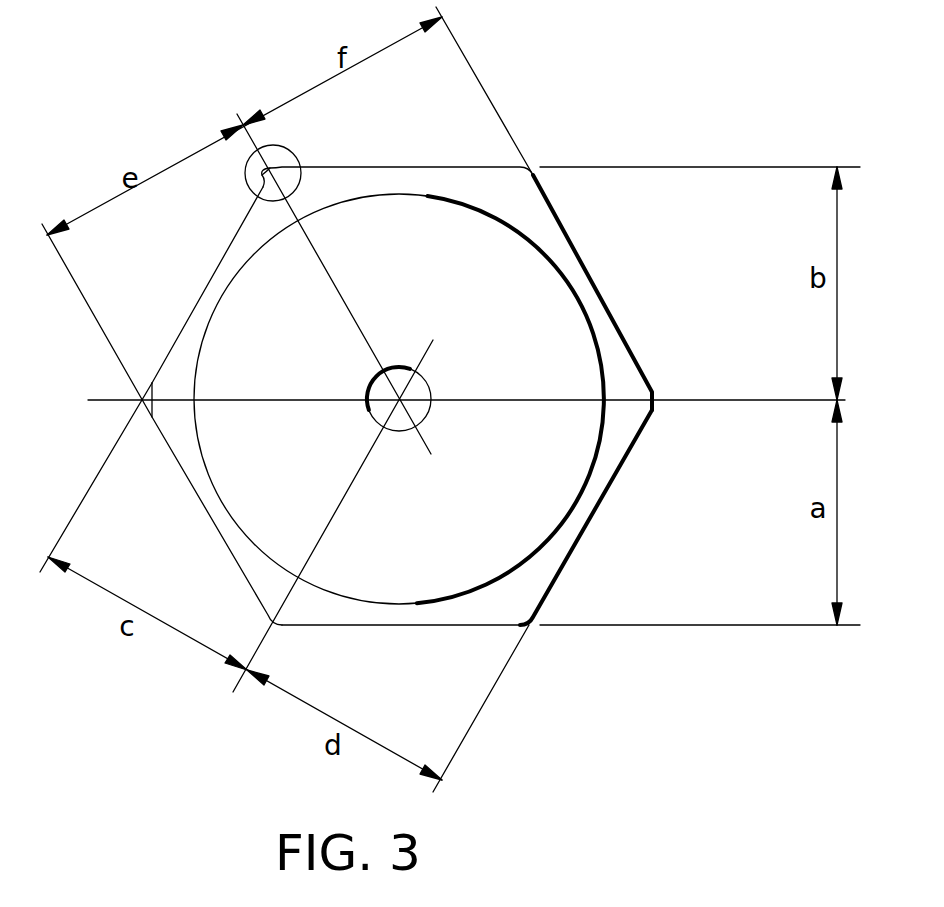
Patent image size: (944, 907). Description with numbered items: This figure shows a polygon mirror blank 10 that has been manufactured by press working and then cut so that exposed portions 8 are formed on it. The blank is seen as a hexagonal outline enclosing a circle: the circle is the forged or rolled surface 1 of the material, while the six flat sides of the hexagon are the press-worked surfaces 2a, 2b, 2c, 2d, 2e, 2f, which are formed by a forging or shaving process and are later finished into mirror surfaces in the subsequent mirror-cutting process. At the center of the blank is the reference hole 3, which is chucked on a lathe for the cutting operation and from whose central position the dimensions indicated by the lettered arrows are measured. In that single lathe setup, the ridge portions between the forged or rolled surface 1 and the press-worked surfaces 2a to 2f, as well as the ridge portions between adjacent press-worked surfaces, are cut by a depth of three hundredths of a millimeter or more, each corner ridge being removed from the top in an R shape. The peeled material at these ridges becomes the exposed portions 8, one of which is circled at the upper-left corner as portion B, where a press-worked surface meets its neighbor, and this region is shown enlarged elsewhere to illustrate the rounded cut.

The polygon mirror blank 10 is at (402, 358).
The forged or rolled surface 1 is at (275, 538).
The press-worked surface 2a is at (430, 167).
The press-worked surface 2b is at (195, 305).
The press-worked surface 2c is at (196, 493).
The press-worked surface 2d is at (352, 627).
The press-worked surface 2e is at (603, 497).
The press-worked surface 2f is at (600, 292).
The reference hole 3 is at (413, 378).
The exposed portion 8 is at (316, 178).
The portion B is at (280, 152).